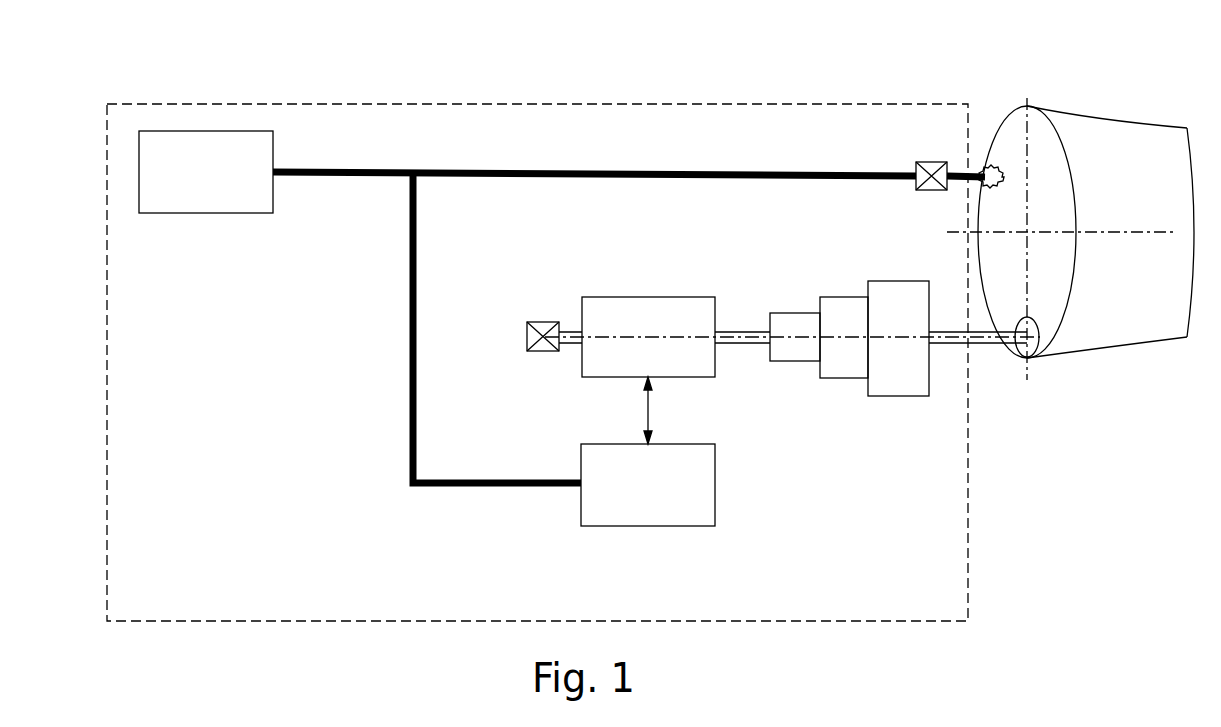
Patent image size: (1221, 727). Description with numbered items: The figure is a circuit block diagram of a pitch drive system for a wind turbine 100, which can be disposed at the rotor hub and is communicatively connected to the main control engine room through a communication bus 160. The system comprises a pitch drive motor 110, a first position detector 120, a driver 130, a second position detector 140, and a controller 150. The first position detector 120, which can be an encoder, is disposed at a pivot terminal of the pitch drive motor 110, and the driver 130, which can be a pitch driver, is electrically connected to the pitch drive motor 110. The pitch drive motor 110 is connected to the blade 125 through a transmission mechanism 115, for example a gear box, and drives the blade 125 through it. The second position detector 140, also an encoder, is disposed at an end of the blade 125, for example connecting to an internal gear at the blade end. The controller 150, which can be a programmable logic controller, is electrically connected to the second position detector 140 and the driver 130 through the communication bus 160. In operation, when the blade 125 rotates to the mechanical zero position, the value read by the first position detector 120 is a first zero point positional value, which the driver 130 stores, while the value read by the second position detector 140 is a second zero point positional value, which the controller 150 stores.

The pitch drive system for the wind turbine 100 is at (592, 104).
The pitch drive motor 110 is at (648, 297).
The transmission mechanism 115 is at (843, 297).
The first position detector 120 is at (543, 351).
The blade 125 is at (1115, 135).
The driver 130 is at (648, 526).
The second position detector 140 is at (932, 162).
The controller 150 is at (203, 131).
The communication bus 160 is at (330, 168).